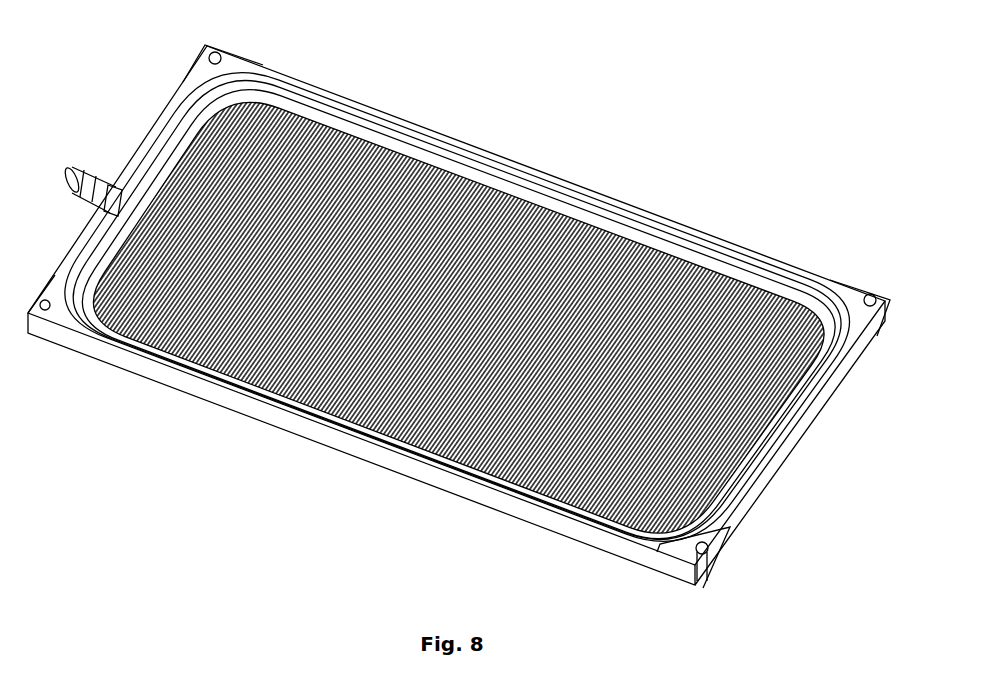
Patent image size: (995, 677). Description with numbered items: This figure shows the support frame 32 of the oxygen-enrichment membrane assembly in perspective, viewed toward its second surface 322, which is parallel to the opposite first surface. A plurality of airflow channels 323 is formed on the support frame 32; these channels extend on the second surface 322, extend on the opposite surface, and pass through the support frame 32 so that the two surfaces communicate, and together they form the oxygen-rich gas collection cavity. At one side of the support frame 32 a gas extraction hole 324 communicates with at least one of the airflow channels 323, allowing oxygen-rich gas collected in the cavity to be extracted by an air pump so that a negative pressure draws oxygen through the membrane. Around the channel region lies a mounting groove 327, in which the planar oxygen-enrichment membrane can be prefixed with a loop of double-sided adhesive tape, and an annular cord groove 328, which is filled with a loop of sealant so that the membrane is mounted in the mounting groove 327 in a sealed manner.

The support frame 32 is at (96, 40).
The second surface 322 is at (441, 139).
The airflow channels 323 is at (740, 290).
The gas extraction hole 324 is at (68, 182).
The mounting groove 327 is at (838, 338).
The annular cord groove 328 is at (827, 303).